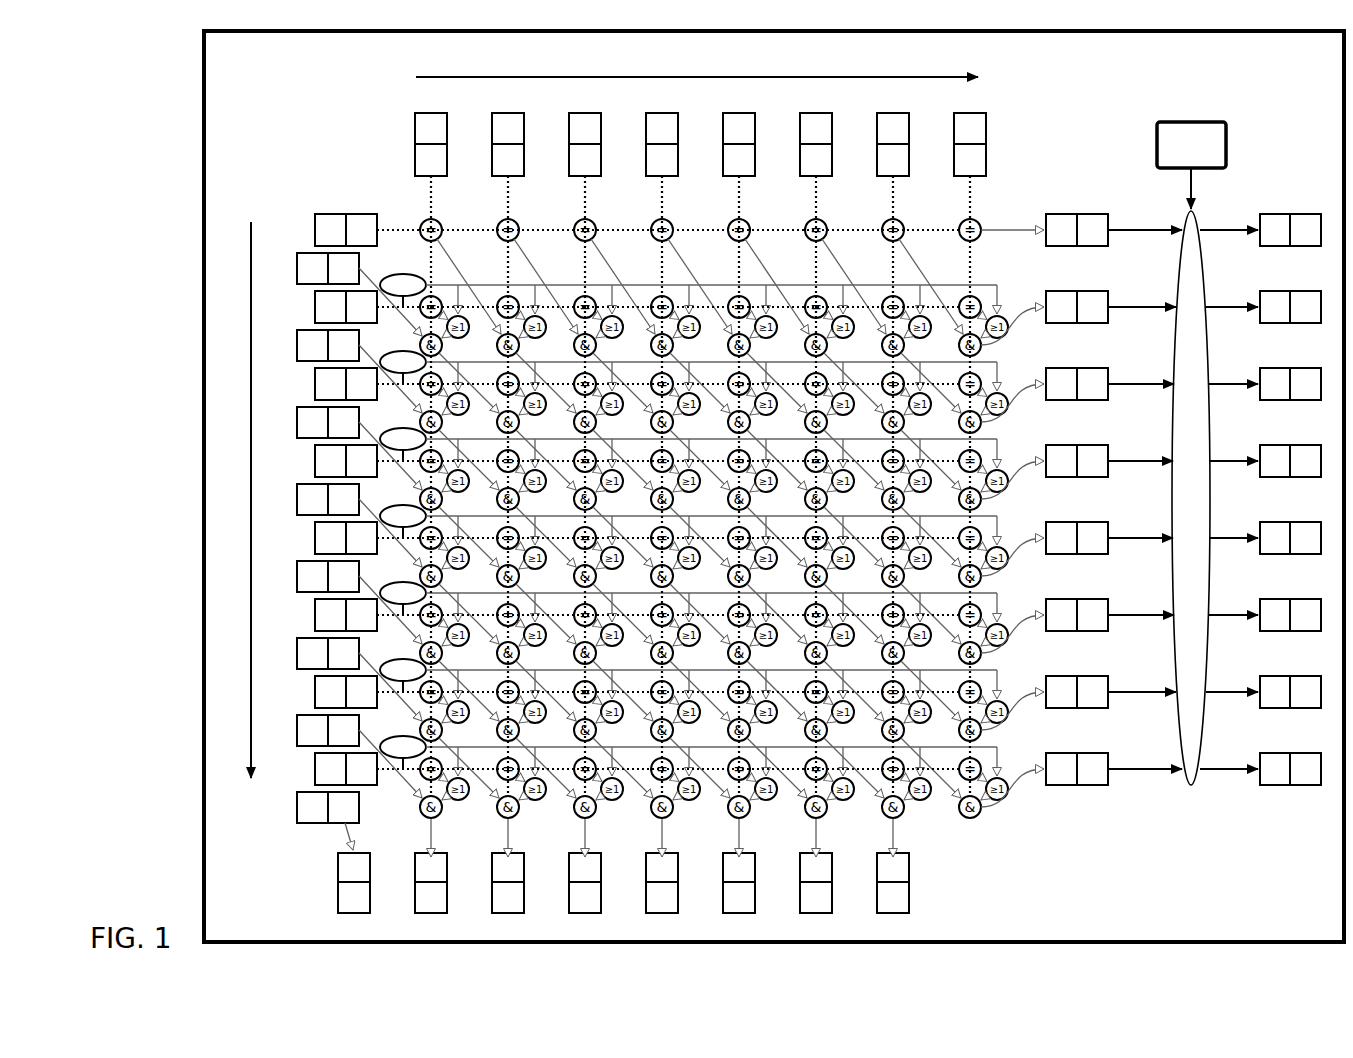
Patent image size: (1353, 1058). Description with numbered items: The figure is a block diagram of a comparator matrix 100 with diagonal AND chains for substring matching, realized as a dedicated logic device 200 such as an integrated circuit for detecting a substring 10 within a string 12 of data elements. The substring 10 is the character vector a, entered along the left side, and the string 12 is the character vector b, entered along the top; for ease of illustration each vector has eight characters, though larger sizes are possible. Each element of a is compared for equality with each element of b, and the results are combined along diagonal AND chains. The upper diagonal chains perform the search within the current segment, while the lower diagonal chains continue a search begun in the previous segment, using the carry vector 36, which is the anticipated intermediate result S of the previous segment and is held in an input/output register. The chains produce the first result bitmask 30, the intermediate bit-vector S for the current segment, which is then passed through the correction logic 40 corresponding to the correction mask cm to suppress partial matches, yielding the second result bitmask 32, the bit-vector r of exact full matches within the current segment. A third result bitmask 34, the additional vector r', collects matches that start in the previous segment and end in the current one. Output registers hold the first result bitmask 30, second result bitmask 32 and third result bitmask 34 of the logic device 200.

The comparator matrix 100 is at (254, 108).
The logic device 200 is at (158, 134).
The substring 10 is at (324, 204).
The string 12 is at (408, 126).
The first result bitmask 30 is at (1061, 203).
The second result bitmask 32 is at (1268, 203).
The third result bitmask 34 is at (328, 867).
The carry vector 36 is at (295, 250).
The correction logic 40 is at (1177, 120).